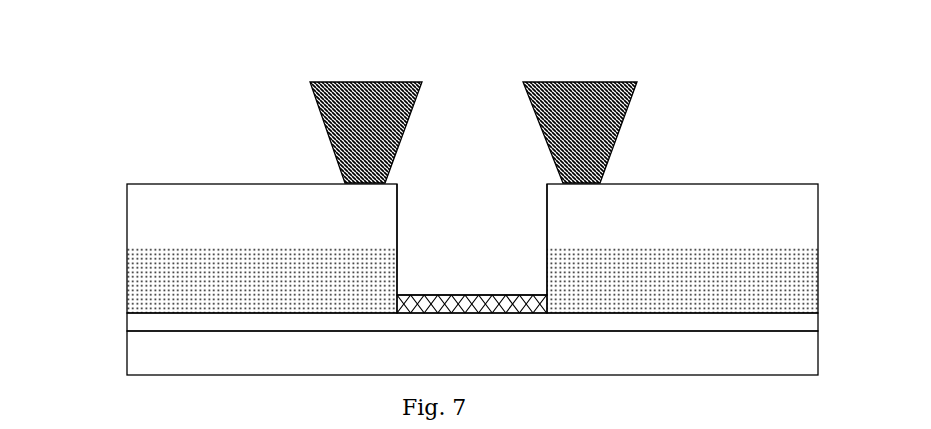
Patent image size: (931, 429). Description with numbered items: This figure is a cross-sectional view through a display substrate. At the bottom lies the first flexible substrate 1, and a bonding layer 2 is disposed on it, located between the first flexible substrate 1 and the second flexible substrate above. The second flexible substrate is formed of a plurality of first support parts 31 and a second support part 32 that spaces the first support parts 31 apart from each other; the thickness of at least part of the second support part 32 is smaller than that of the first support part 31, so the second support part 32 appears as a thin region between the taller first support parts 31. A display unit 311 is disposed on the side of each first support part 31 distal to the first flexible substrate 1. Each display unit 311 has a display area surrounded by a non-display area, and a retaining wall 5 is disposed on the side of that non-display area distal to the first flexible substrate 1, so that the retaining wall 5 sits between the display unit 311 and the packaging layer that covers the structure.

The first flexible substrate 1 is at (441, 316).
The bonding layer 2 is at (441, 280).
The display unit 311 is at (435, 213).
The first support part 31 is at (472, 239).
The second support part 32 is at (472, 262).
The retaining wall 5 is at (473, 106).